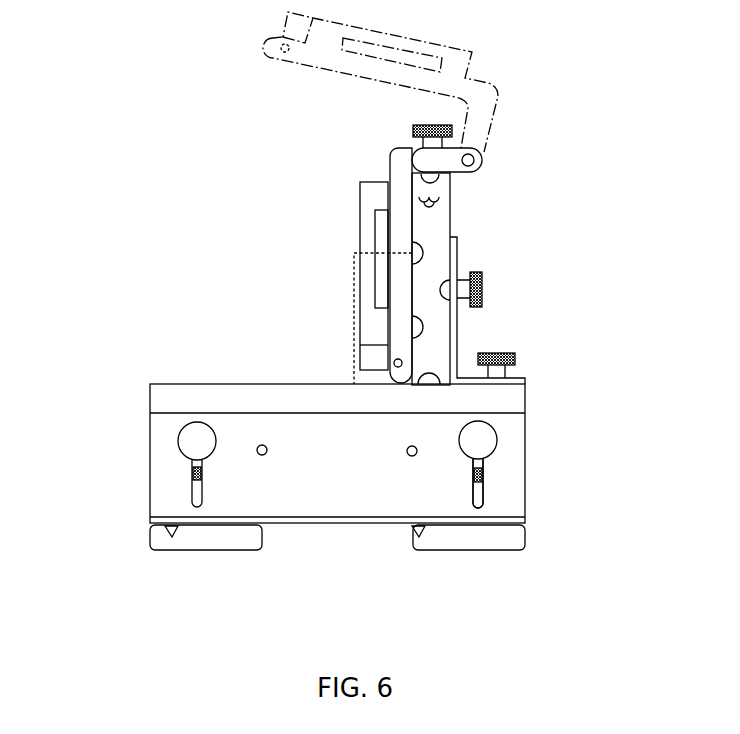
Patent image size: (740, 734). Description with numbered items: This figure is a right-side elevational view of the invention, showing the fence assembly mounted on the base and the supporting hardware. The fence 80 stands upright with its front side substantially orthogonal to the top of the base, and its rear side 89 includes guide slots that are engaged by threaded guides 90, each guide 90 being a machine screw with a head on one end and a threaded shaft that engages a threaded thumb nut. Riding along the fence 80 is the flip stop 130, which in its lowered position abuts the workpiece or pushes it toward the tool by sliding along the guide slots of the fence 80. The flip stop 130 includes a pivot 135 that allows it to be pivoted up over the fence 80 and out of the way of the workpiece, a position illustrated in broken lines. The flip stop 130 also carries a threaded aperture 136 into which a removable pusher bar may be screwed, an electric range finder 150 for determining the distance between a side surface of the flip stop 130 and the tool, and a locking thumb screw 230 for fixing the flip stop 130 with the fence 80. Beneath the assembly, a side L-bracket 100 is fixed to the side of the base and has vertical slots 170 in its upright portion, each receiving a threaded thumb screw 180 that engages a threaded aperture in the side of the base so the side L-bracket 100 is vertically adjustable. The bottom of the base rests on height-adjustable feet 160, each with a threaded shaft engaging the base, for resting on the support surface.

The fence 80 is at (425, 285).
The rear side 89 is at (452, 207).
The guide 90 is at (480, 273).
The side L-bracket 100 is at (340, 487).
The flip stop 130 is at (403, 163).
The pivot 135 is at (468, 160).
The threaded aperture 136 is at (400, 366).
The electric range finder 150 is at (368, 213).
The height-adjustable foot 160 is at (212, 538).
The vertical slot 170 is at (483, 493).
The threaded thumb screw 180 is at (195, 448).
The locking thumb screw 230 is at (427, 123).